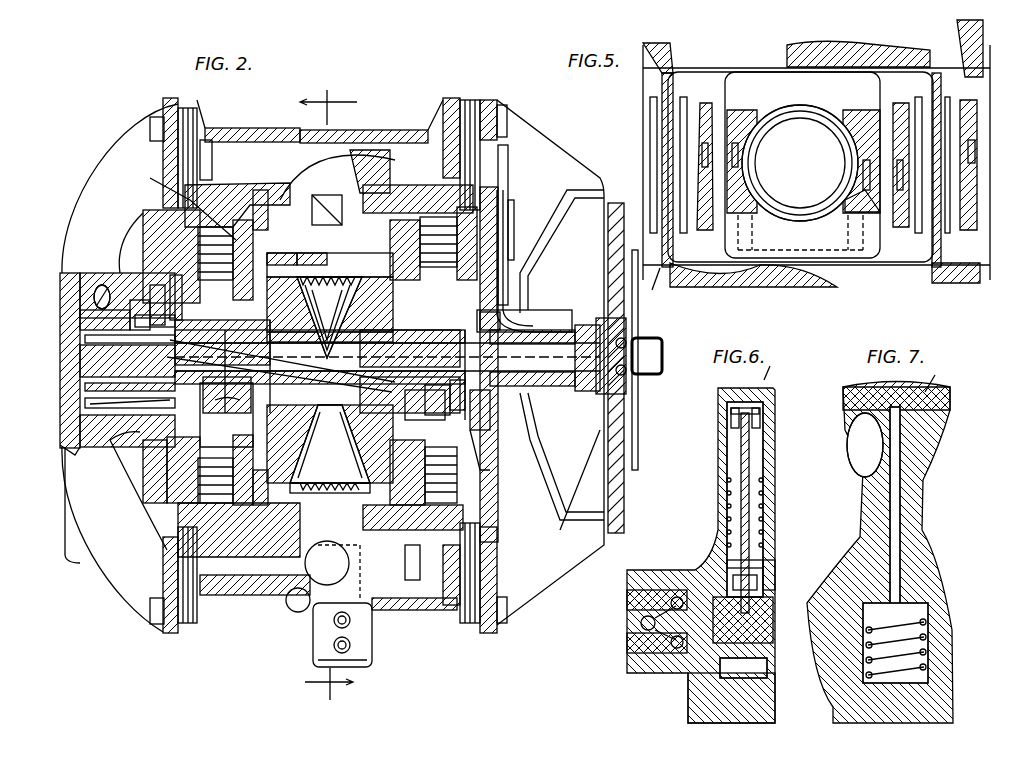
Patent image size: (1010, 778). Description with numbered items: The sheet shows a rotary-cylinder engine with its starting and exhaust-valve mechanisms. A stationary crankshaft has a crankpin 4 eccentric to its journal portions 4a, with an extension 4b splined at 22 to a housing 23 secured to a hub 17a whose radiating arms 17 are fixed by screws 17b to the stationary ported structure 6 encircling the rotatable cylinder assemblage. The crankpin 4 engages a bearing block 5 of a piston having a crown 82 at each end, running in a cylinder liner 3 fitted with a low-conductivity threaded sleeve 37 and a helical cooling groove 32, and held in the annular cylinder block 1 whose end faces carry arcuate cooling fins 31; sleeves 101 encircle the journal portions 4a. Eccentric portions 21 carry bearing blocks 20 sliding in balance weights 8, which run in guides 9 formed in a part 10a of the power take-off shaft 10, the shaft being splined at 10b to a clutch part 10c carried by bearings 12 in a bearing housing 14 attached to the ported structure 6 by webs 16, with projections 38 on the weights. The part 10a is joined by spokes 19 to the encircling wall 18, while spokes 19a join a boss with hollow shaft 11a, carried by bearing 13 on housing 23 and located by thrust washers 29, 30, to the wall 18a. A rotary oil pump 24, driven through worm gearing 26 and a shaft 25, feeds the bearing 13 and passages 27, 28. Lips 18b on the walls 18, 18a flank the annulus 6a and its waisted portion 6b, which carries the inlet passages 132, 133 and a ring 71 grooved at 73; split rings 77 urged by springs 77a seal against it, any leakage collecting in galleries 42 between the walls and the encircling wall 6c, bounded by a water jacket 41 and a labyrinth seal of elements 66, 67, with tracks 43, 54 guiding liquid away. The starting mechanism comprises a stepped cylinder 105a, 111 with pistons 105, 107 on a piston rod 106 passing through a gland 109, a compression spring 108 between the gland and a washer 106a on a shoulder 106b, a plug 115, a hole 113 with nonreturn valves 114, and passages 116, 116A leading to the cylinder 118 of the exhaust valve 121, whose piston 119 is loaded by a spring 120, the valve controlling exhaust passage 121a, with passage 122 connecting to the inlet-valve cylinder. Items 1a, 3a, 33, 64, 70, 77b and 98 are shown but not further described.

In FIG. 2, the annular cylinder block 1 is at (387, 390).
In FIG. 5, the annular cylinder block 1 is at (655, 279).
In FIG. 6, the annular cylinder block 1 is at (769, 374).
In FIG. 7, the annular cylinder block 1 is at (932, 381).
In FIG. 2, the cover plate 1a is at (175, 280).
In FIG. 2, the cylinder liner 3 is at (282, 251).
In FIG. 5, the cylinder liner 3 is at (800, 163).
In FIG. 5, the gear hub 3a is at (851, 219).
In FIG. 2, the crankpin 4 is at (435, 123).
In FIG. 2, the journal portions 4a is at (330, 471).
In FIG. 2, the crankshaft extension 4b is at (100, 360).
In FIG. 2, the bearing block 5 is at (327, 345).
In FIG. 2, the stationary ported structure 6 is at (290, 138).
In FIG. 6, the stationary ported structure 6 is at (776, 462).
In FIG. 7, the stationary ported structure 6 is at (858, 480).
In FIG. 2, the annulus 6a is at (508, 205).
In FIG. 2, the waisted portion 6b is at (410, 135).
In FIG. 2, the encircling wall 6c is at (240, 128).
In FIG. 2, the balance weights 8 is at (425, 413).
In FIG. 2, the guides 9 is at (452, 407).
In FIG. 2, the power take-off shaft 10 is at (572, 390).
In FIG. 2, the power take-off shaft part 10a is at (552, 440).
In FIG. 2, the spline 10b is at (570, 332).
In FIG. 2, the clutch part 10c is at (626, 230).
In FIG. 2, the hollow shaft 11a is at (100, 425).
In FIG. 2, the bearings 12 is at (503, 325).
In FIG. 2, the bearing 13 is at (115, 445).
In FIG. 2, the bearing housing 14 is at (548, 420).
In FIG. 2, the webs 16 is at (527, 148).
In FIG. 2, the radiating arms 17 is at (112, 158).
In FIG. 2, the hub 17a is at (75, 452).
In FIG. 2, the screws 17b is at (152, 118).
In FIG. 2, the encircling wall 18 is at (440, 195).
In FIG. 2, the encircling wall 18a is at (205, 200).
In FIG. 2, the axially extending lips 18b is at (240, 185).
In FIG. 2, the spokes 19 is at (490, 250).
In FIG. 5, the spokes 19 is at (840, 272).
In FIG. 2, the spokes 19a is at (175, 240).
In FIG. 5, the spokes 19a is at (672, 56).
In FIG. 2, the bearing blocks 20 is at (128, 448).
In FIG. 2, the eccentric portions 21 is at (180, 300).
In FIG. 2, the spline 22 is at (90, 338).
In FIG. 2, the housing 23 is at (90, 386).
In FIG. 2, the rotary oil pump 24 is at (90, 540).
In FIG. 2, the shaft 25 is at (125, 273).
In FIG. 2, the worm gearing 26 is at (90, 404).
In FIG. 2, the passages 27 is at (178, 318).
In FIG. 2, the passages 28 is at (329, 383).
In FIG. 2, the thrust washer 29 is at (158, 470).
In FIG. 2, the thrust washer 30 is at (90, 318).
In FIG. 2, the arcuate cooling fins 31 is at (198, 480).
In FIG. 5, the arcuate cooling fins 31 is at (745, 74).
In FIG. 2, the helical groove 32 is at (175, 230).
In FIG. 5, the helical groove 32 is at (800, 163).
In FIG. 5, the key 33 is at (820, 225).
In FIG. 2, the externally threaded sleeve 37 is at (330, 357).
In FIG. 2, the small projections 38 is at (435, 412).
In FIG. 2, the water jacket 41 is at (292, 140).
In FIG. 2, the gallery passages 42 is at (180, 158).
In FIG. 2, the tracks 43 is at (258, 192).
In FIG. 2, the tracks 54 is at (212, 145).
In FIG. 5, the support 64 is at (740, 140).
In FIG. 2, the labyrinth seal elements 66 is at (172, 100).
In FIG. 2, the labyrinth seal elements 67 is at (186, 206).
In FIG. 5, the spring plate 70 is at (706, 105).
In FIG. 2, the ring 71 is at (390, 170).
In FIG. 2, the groove 73 is at (300, 253).
In FIG. 2, the split rings 77 is at (420, 186).
In FIG. 2, the springs 77a is at (470, 200).
In FIG. 2, the plate web 77b is at (512, 235).
In FIG. 2, the piston crown 82 is at (360, 262).
In FIG. 2, the pocket 98 is at (226, 415).
In FIG. 2, the sleeves 101 is at (175, 300).
In FIG. 6, the piston 105 is at (730, 436).
In FIG. 6, the cylinder portion 105a is at (760, 440).
In FIG. 6, the piston rod 106 is at (740, 456).
In FIG. 6, the washer 106a is at (762, 478).
In FIG. 6, the shoulder 106b is at (762, 452).
In FIG. 6, the piston 107 is at (762, 575).
In FIG. 6, the compression spring 108 is at (727, 480).
In FIG. 6, the gland 109 is at (727, 556).
In FIG. 6, the cylinder portion 111 is at (690, 556).
In FIG. 6, the hole 113 is at (645, 614).
In FIG. 6, the nonreturn valves 114 is at (648, 650).
In FIG. 6, the plug 115 is at (715, 700).
In FIG. 6, the passage 116 is at (805, 570).
In FIG. 6, the passage 116A is at (775, 585).
In FIG. 7, the cylinder 118 is at (928, 608).
In FIG. 7, the piston 119 is at (928, 630).
In FIG. 7, the compression spring 120 is at (928, 672).
In FIG. 7, the exhaust valve 121 is at (865, 445).
In FIG. 7, the exhaust passage 121a is at (906, 400).
In FIG. 7, the passage 122 is at (938, 600).
In FIG. 2, the inlet passage 132 is at (335, 196).
In FIG. 2, the inlet passage 133 is at (318, 180).